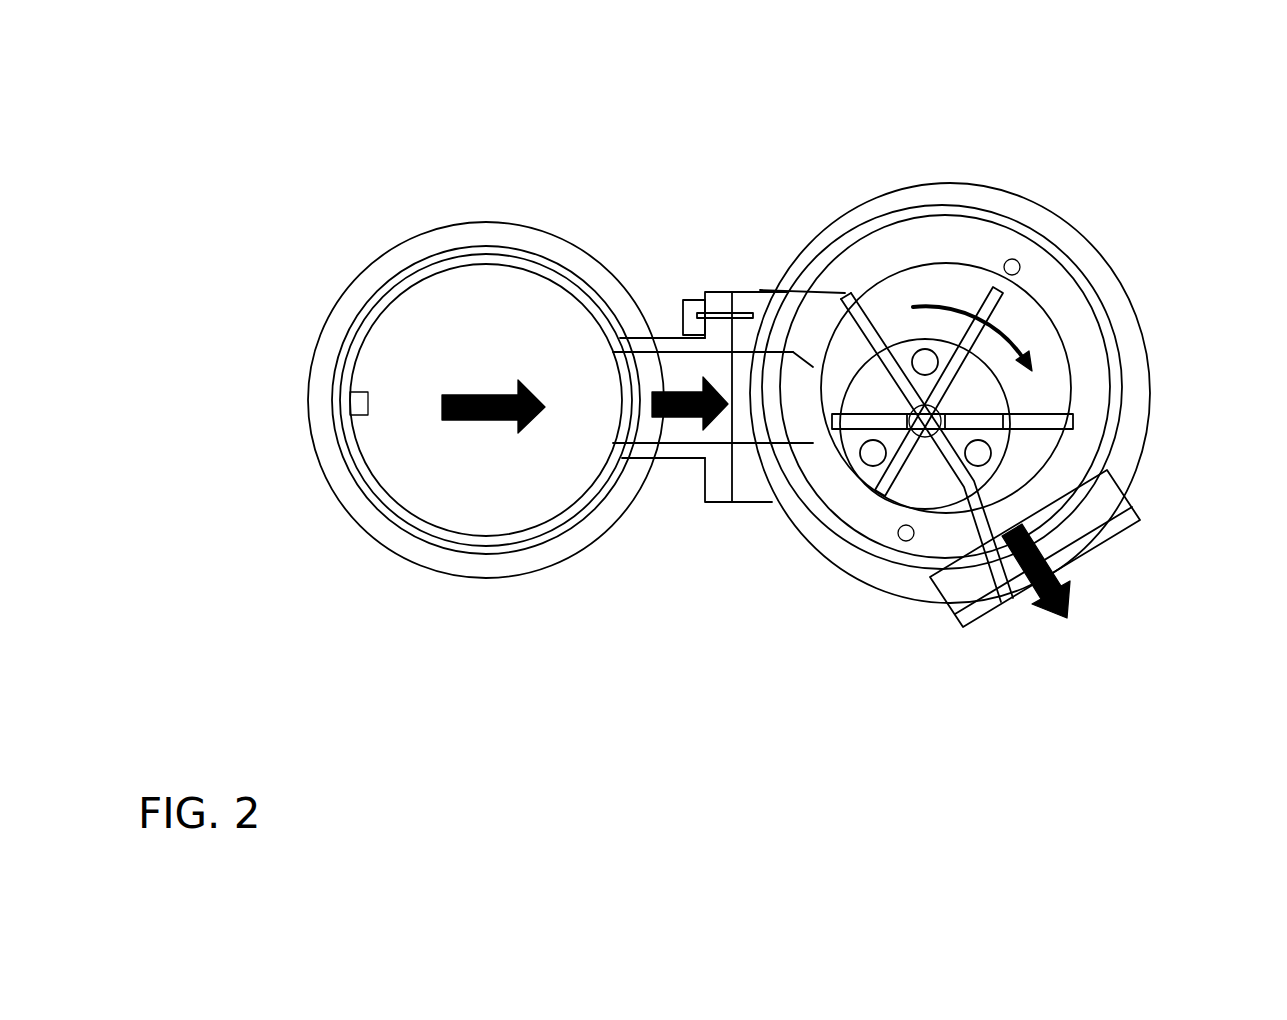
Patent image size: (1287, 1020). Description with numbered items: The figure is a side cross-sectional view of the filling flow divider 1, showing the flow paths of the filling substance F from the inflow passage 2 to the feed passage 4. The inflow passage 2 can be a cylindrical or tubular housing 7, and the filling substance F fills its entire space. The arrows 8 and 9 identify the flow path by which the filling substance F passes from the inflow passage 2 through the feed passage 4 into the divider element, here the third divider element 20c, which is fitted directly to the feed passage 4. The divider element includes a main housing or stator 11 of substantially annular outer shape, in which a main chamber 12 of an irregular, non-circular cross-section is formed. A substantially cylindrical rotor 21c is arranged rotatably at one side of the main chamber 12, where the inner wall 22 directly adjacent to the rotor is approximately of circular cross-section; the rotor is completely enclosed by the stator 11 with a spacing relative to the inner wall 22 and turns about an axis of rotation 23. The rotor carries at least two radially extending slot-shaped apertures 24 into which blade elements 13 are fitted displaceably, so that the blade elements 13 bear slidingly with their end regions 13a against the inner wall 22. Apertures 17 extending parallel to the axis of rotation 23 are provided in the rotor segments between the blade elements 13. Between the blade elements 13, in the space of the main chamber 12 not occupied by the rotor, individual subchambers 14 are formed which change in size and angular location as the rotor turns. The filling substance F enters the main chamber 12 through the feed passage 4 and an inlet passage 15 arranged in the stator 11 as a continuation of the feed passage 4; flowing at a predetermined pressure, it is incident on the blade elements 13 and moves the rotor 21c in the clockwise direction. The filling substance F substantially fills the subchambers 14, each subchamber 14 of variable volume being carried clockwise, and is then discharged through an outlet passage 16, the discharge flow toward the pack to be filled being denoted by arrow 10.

The filling flow divider 1 is at (555, 100).
The filling substance F is at (452, 313).
The inflow passage 2 is at (533, 338).
The tubular housing 7 is at (372, 292).
The arrow 8 is at (443, 407).
The feed passage 4 is at (687, 422).
The arrow 9 is at (683, 412).
The inlet passage 15 is at (797, 393).
The third divider element 20c is at (1000, 175).
The stator 11 is at (1032, 203).
The inner wall 22 is at (1057, 337).
The axis of rotation 23 is at (942, 413).
The main chamber 12 is at (982, 268).
The rotor 21c is at (909, 494).
The blade elements 13 is at (973, 340).
The subchambers 14 is at (898, 287).
The end regions 13a is at (1030, 313).
The apertures 17 is at (912, 363).
The slot-shaped apertures 24 is at (820, 355).
The arrow 10 is at (1045, 610).
The outlet passage 16 is at (1058, 548).